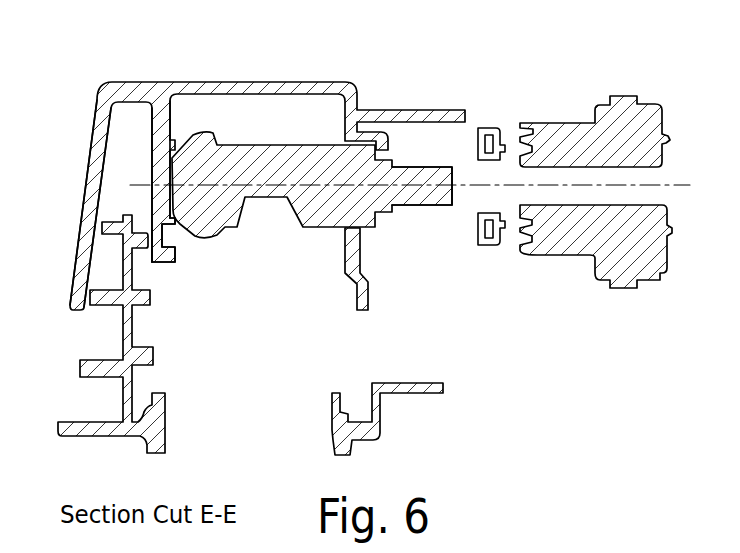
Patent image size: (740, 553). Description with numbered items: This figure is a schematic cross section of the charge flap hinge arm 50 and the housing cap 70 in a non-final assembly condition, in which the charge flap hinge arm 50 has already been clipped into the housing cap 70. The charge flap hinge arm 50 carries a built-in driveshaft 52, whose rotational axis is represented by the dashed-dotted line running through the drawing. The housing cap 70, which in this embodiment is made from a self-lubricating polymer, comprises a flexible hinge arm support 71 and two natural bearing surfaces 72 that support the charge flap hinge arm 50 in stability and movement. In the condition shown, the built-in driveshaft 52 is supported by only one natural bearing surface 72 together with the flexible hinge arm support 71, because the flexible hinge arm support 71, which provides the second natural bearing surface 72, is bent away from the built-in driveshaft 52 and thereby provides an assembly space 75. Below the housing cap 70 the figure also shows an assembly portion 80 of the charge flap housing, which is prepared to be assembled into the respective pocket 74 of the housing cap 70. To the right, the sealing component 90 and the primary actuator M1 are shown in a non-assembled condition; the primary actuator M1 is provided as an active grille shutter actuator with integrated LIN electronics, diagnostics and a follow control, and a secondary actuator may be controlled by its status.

The charge flap hinge arm 50 is at (300, 233).
The built-in driveshaft 52 is at (427, 216).
The housing cap 70 is at (363, 85).
The flexible hinge arm support 71 is at (168, 272).
The natural bearing surface 72 is at (352, 238).
The pocket 74 is at (117, 151).
The assembly space 75 is at (163, 200).
The assembly portion 80 is at (177, 416).
The sealing component 90 is at (484, 258).
The primary actuator M1 is at (583, 266).